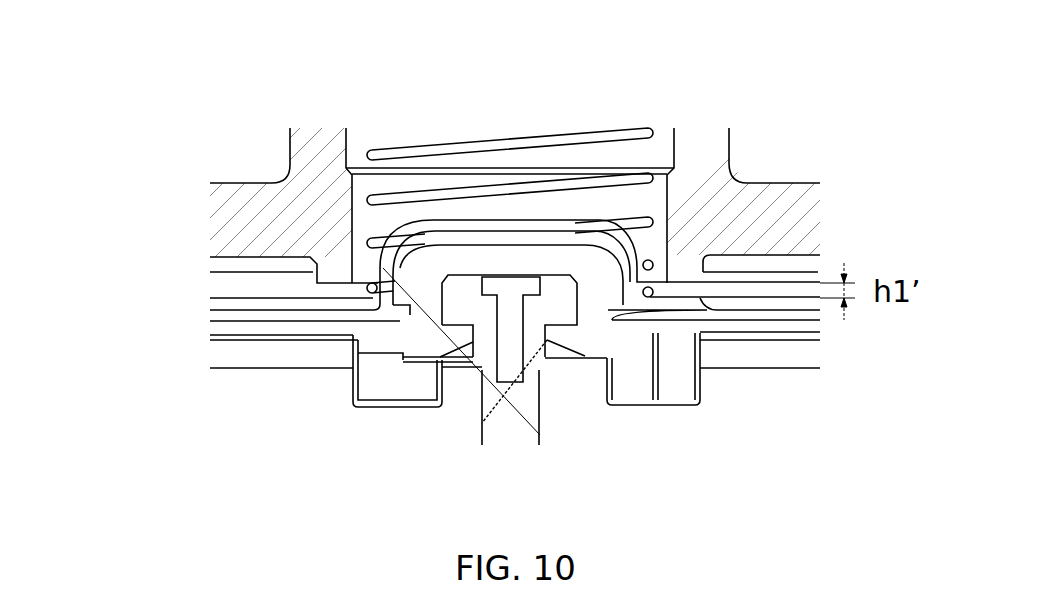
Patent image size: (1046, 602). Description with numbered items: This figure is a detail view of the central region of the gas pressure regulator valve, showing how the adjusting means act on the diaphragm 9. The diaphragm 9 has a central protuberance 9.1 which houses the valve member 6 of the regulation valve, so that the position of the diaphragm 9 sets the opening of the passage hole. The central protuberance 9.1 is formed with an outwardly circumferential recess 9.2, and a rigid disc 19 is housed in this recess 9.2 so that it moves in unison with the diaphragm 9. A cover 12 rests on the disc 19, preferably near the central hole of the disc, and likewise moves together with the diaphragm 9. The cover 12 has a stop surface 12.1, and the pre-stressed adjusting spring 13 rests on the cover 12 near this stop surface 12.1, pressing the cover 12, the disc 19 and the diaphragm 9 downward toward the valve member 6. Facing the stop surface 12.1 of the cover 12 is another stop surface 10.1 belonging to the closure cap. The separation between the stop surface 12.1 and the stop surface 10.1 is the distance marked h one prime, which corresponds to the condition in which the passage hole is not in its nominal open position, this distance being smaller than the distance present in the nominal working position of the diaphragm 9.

The valve member 6 is at (517, 423).
The diaphragm 9 is at (520, 220).
The central protuberance 9.1 is at (430, 273).
The outwardly circumferential recess 9.2 is at (413, 310).
The stop surface 10.1 is at (345, 292).
The cover 12 is at (570, 220).
The stop surface 12.1 is at (335, 285).
The adjusting spring 13 is at (497, 143).
The rigid disc 19 is at (693, 315).